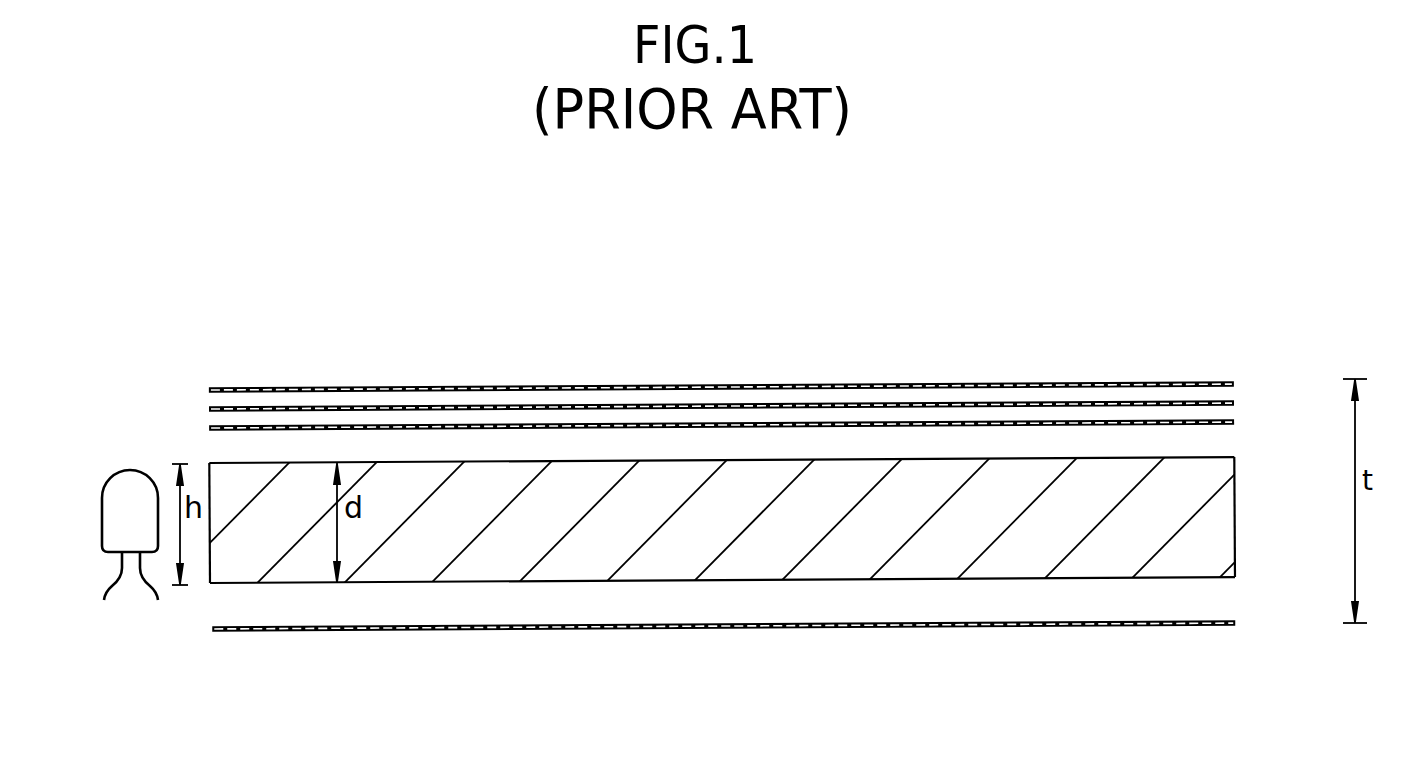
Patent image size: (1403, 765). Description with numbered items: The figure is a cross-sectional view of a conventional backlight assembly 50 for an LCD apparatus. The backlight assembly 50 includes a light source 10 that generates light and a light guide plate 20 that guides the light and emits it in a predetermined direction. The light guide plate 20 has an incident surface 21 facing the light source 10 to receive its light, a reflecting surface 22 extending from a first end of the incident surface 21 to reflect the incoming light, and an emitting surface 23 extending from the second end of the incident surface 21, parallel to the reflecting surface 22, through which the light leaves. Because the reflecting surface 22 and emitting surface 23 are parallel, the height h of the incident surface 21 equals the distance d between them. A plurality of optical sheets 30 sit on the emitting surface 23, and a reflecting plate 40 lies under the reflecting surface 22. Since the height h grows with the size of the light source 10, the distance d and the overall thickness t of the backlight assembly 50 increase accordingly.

The light source 10 is at (128, 487).
The light guide plate 20 is at (755, 584).
The incident surface 21 is at (210, 520).
The reflecting surface 22 is at (434, 580).
The emitting surface 23 is at (847, 460).
The optical sheets 30 is at (1245, 378).
The reflecting plate 40 is at (1232, 617).
The backlight assembly 50 is at (745, 300).